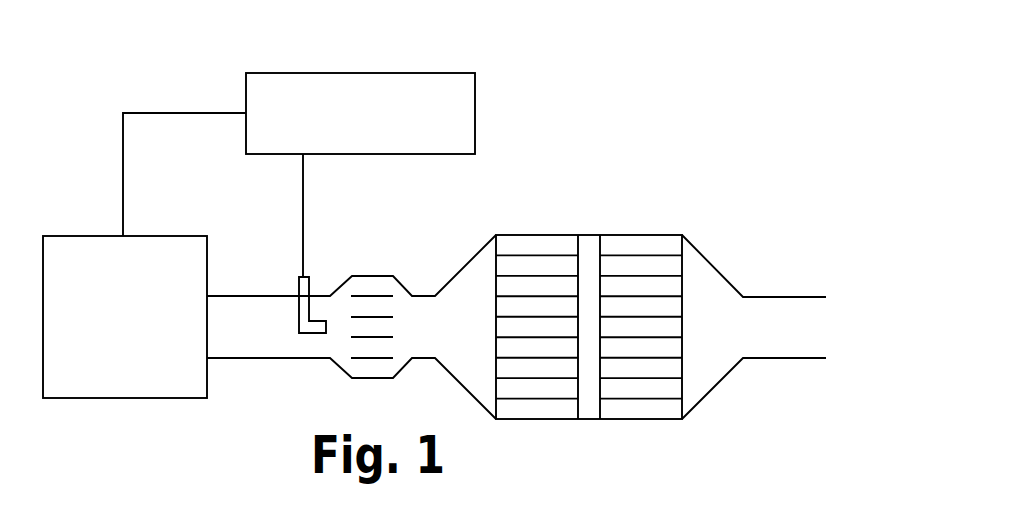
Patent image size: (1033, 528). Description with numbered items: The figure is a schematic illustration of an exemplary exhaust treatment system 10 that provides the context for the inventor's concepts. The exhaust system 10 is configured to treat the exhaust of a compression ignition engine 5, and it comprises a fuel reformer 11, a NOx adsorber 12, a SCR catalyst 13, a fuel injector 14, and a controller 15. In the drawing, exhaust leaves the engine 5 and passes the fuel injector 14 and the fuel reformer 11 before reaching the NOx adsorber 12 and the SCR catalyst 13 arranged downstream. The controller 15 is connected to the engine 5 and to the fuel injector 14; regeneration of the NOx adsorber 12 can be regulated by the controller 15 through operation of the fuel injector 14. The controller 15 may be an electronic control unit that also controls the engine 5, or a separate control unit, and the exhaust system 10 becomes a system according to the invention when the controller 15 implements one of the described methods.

The compression ignition engine 5 is at (143, 257).
The exhaust treatment system 10 is at (509, 61).
The fuel reformer 11 is at (377, 296).
The NOx adsorber 12 is at (545, 258).
The SCR catalyst 13 is at (646, 258).
The fuel injector 14 is at (304, 288).
The controller 15 is at (328, 82).